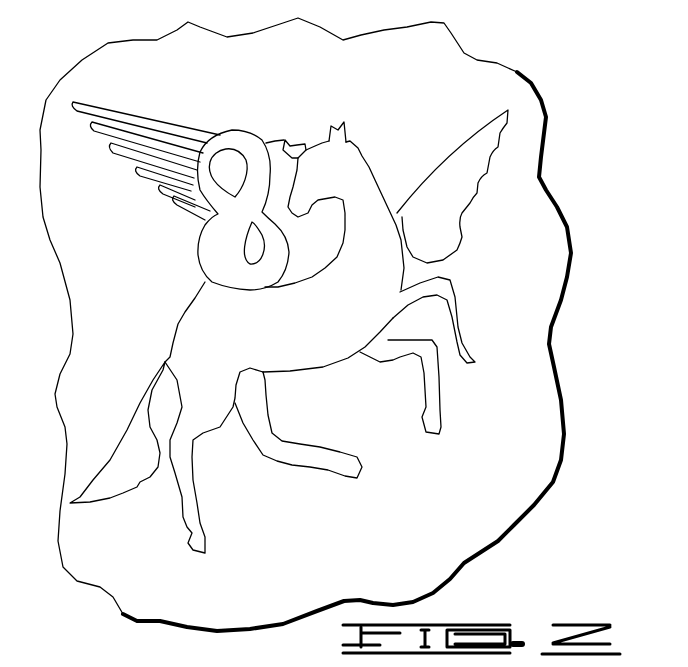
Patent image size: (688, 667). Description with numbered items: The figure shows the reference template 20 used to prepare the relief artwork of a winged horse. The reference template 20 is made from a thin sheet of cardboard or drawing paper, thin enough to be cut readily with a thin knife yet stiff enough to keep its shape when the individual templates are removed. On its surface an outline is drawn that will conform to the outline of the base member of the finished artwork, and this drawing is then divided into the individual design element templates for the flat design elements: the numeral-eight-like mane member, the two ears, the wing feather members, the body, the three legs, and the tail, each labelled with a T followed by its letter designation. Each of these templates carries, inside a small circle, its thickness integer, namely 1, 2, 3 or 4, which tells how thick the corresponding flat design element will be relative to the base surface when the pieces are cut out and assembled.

The reference template 20 is at (131, 60).
The thickness integer 1 is at (295, 139).
The thickness integer 2 is at (274, 304).
The thickness integer 3 is at (259, 241).
The thickness integer 4 is at (358, 141).